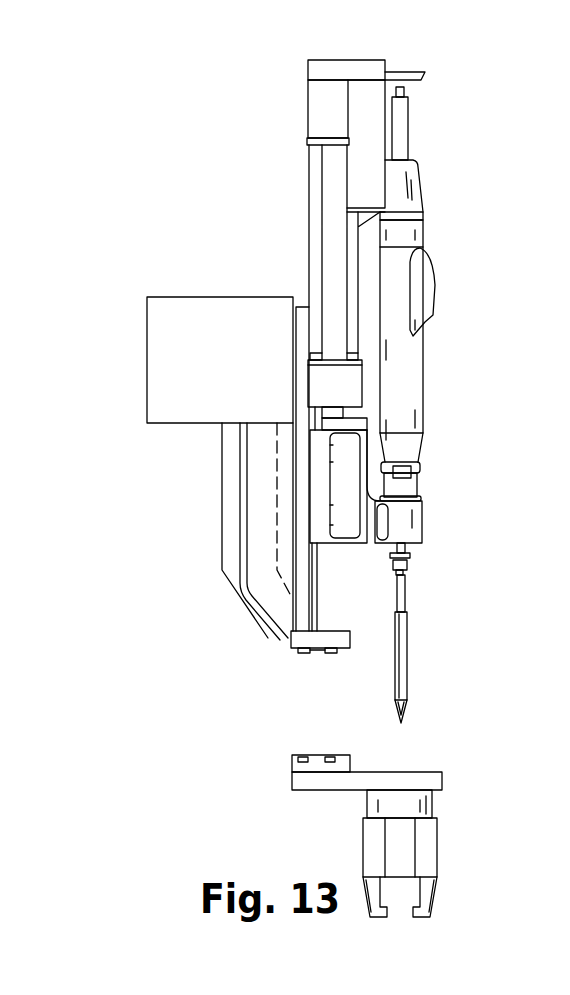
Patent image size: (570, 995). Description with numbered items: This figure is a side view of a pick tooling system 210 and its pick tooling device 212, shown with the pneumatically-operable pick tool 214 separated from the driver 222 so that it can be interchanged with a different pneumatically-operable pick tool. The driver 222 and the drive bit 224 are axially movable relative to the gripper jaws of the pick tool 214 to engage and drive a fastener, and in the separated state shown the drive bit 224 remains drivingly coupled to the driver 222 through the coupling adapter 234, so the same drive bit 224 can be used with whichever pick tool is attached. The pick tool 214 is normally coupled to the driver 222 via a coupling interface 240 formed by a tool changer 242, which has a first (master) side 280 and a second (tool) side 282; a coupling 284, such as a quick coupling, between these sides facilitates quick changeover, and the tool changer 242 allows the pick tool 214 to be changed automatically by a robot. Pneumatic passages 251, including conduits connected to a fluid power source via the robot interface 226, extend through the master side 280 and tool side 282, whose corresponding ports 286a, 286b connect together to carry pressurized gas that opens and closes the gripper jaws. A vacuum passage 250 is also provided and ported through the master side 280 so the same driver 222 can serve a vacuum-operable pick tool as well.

The pick tooling system 210 is at (260, 78).
The pick tooling device 212 is at (462, 110).
The pick tool 214 is at (466, 781).
The driver 222 is at (290, 210).
The drive bit 224 is at (404, 638).
The robot interface 226 is at (243, 378).
The coupling adapter 234 is at (411, 564).
The coupling interface 240 is at (313, 649).
The tool changer 242 is at (218, 635).
The vacuum passage 250 is at (277, 490).
The pneumatic passages 251 is at (240, 528).
The first (master) side 280 is at (292, 640).
The second (tool) side 282 is at (290, 765).
The coupling 284 is at (303, 654).
The port 286a is at (332, 654).
The port 286b is at (333, 757).